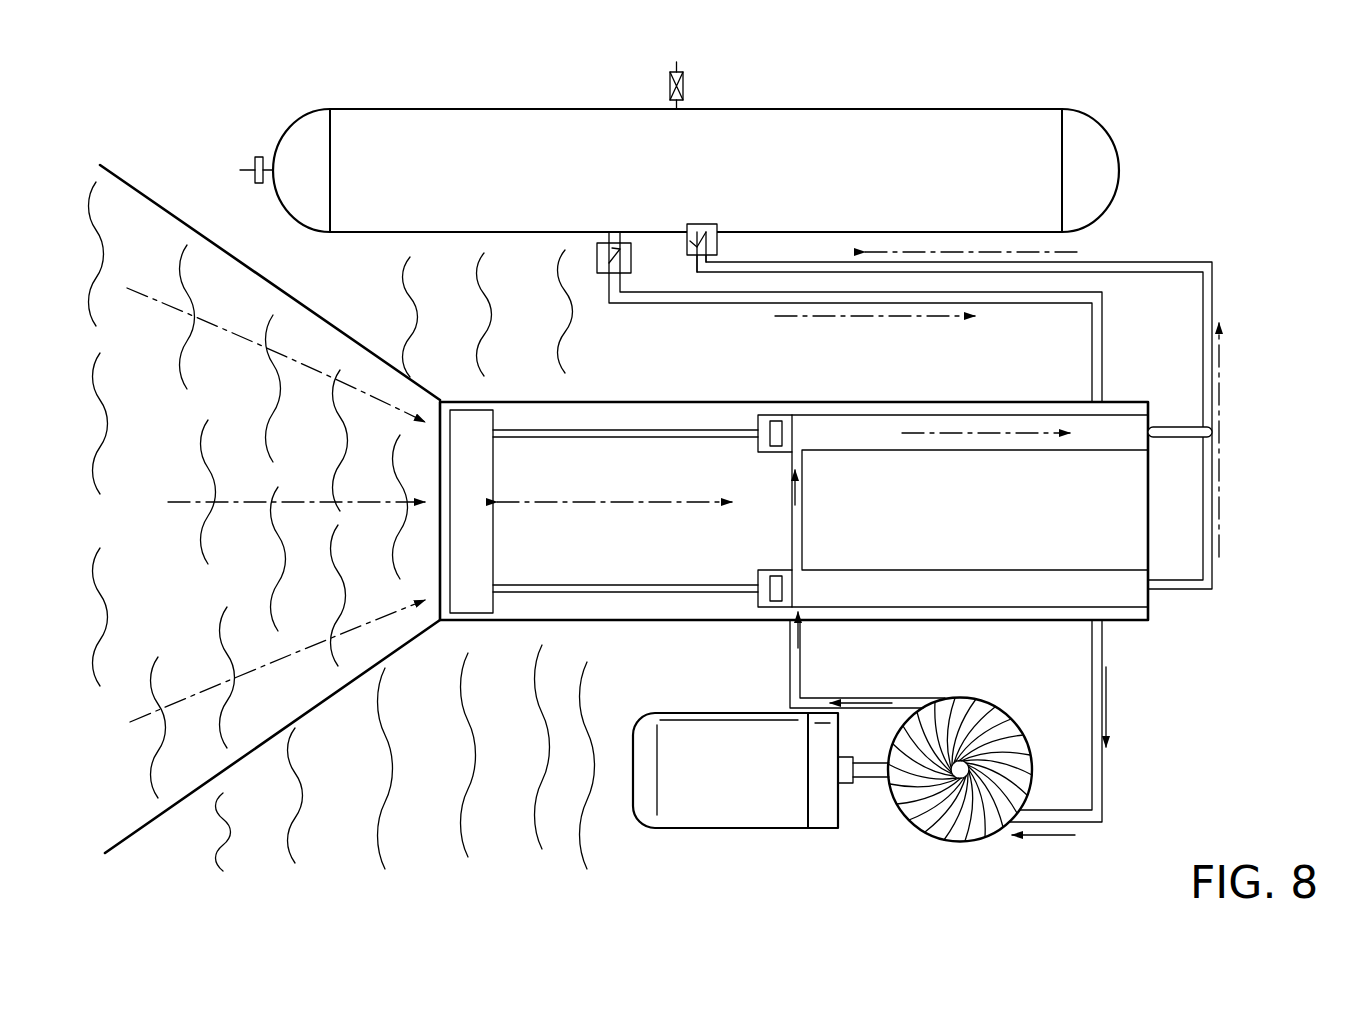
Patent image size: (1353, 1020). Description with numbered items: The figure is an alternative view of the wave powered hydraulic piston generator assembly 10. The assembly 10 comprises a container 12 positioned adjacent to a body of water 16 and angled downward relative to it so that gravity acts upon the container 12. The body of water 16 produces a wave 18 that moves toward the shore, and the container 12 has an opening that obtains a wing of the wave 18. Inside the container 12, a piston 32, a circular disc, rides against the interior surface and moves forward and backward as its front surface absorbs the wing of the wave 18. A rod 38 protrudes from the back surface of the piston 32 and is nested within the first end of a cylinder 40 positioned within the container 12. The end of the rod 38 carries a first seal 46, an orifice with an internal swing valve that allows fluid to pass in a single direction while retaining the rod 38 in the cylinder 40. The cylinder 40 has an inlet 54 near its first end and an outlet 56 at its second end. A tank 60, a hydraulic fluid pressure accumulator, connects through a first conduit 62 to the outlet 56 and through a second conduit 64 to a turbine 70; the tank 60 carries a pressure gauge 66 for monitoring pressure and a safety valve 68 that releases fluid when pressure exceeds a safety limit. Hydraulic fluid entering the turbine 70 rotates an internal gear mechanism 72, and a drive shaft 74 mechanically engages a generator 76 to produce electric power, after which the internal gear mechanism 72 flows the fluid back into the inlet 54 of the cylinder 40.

The wave powered hydraulic piston generator assembly 10 is at (1146, 148).
The container 12 is at (648, 408).
The body of water 16 is at (422, 787).
The wave 18 is at (220, 588).
The piston 32 is at (478, 530).
The rod 38 is at (614, 437).
The cylinder 40 is at (856, 445).
The first seal 46 is at (792, 432).
The inlet 54 is at (804, 530).
The outlet 56 is at (1178, 440).
The tank 60 is at (786, 140).
The first conduit 62 is at (1214, 443).
The second conduit 64 is at (1104, 770).
The pressure gauge 66 is at (242, 171).
The safety valve 68 is at (668, 92).
The turbine 70 is at (972, 774).
The internal gear mechanism 72 is at (1024, 737).
The drive shaft 74 is at (866, 784).
The generator 76 is at (710, 828).